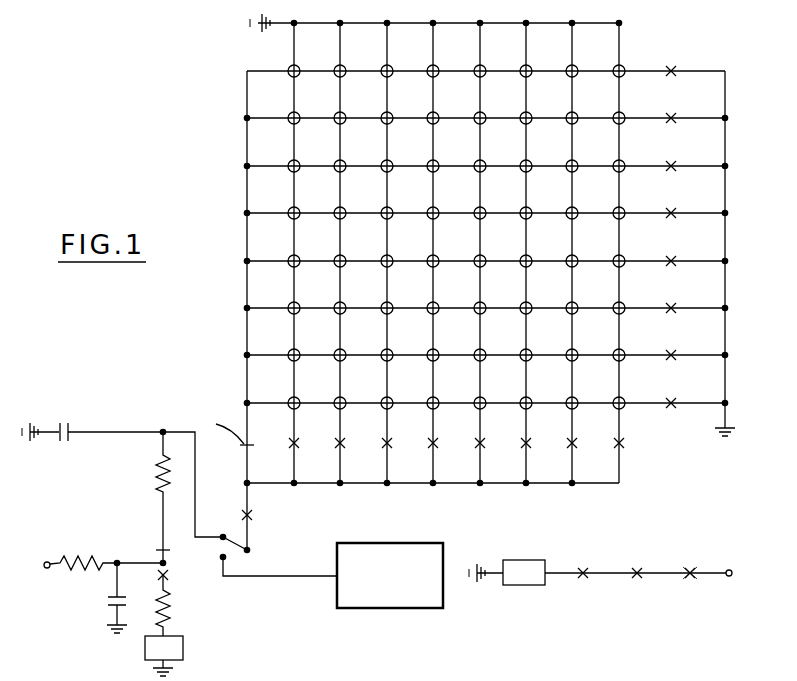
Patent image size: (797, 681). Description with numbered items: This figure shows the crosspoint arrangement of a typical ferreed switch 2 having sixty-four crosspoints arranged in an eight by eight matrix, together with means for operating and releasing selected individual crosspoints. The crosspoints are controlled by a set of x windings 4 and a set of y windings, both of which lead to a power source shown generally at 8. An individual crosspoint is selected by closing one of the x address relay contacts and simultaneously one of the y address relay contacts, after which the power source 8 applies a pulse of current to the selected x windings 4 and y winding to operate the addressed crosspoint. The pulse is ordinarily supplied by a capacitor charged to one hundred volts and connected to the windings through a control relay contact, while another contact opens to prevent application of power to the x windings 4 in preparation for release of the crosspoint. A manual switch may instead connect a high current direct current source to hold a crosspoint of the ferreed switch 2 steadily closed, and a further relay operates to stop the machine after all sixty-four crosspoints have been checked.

The ferreed switch 2 is at (218, 141).
The x windings 4 is at (705, 48).
The power source 8 is at (265, 597).